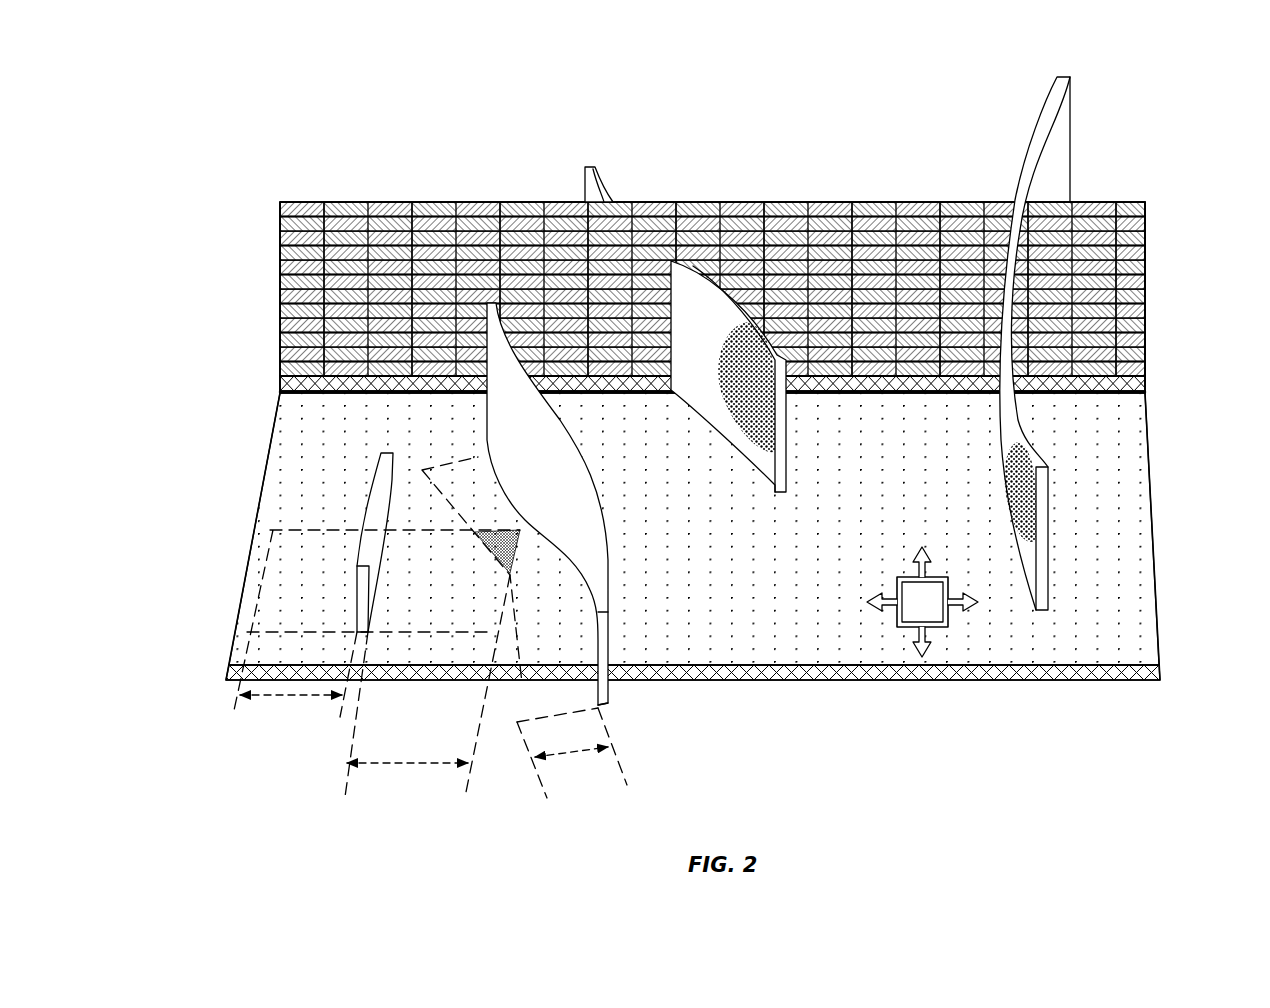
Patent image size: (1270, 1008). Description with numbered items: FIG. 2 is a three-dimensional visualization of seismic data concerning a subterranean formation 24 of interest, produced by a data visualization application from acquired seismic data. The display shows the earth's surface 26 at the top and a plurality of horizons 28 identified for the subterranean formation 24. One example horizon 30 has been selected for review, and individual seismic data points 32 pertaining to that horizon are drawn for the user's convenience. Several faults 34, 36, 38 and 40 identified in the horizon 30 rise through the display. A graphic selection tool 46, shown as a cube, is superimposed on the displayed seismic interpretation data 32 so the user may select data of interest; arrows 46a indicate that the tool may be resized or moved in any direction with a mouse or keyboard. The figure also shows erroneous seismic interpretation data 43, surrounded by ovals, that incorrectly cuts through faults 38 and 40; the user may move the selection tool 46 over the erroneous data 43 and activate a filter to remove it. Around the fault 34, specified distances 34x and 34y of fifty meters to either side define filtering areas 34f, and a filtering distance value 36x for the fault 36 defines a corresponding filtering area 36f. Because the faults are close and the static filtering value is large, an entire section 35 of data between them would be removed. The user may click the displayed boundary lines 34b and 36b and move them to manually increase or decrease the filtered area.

The subterranean formation 24 is at (290, 130).
The earth's surface 26 is at (312, 207).
The horizons 28 is at (1186, 278).
The horizon 30 is at (1145, 386).
The seismic data points 32 is at (838, 657).
The fault 34 is at (370, 517).
The boundary line 34b is at (297, 530).
The filtering area 34f is at (300, 587).
The specified distance 34x is at (275, 697).
The specified distance 34y is at (398, 765).
The section of seismic data 35 is at (479, 543).
The fault 36 is at (572, 652).
The boundary line 36b is at (478, 460).
The filtering area 36f is at (612, 637).
The filtering distance value 36x is at (572, 755).
The fault 38 is at (598, 186).
The fault 40 is at (1058, 157).
The erroneous seismic interpretation data 43 is at (718, 410).
The graphic selection tool 46 is at (940, 614).
The arrows 46a is at (891, 594).